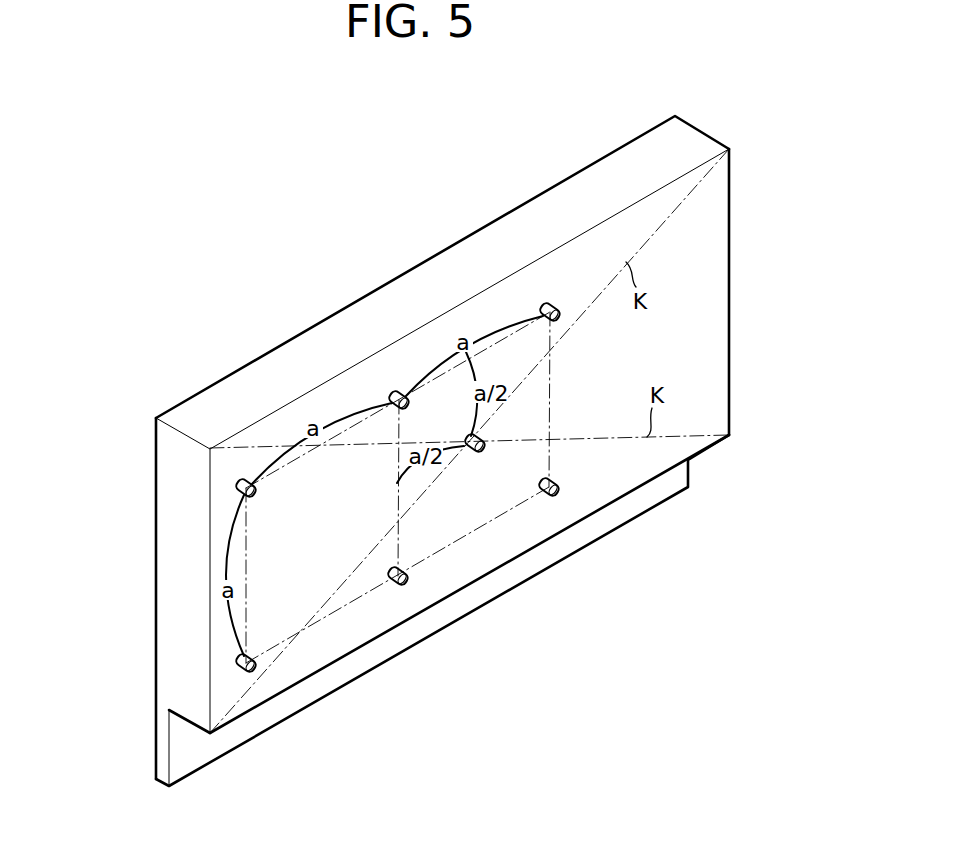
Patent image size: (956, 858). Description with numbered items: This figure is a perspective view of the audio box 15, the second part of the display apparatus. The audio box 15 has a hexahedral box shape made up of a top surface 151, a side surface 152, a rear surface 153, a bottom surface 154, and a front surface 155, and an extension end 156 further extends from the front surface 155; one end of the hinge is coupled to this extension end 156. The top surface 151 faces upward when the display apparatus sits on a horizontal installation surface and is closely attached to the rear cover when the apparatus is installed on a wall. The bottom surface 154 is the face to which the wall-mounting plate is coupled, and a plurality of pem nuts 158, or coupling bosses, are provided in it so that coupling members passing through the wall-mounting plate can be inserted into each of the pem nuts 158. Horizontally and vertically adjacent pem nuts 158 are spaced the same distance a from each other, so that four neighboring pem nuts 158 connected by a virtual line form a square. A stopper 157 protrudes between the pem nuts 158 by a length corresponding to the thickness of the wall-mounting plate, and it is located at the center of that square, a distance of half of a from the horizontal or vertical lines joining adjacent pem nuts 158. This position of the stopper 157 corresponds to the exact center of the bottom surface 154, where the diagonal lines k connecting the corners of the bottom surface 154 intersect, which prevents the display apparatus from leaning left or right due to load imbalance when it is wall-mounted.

The audio box 15 is at (338, 160).
The top surface 151 is at (155, 496).
The side surface 152 is at (167, 595).
The rear surface 153 is at (258, 378).
The bottom surface 154 is at (729, 258).
The front surface 155 is at (188, 722).
The extension end 156 is at (156, 762).
The stopper 157 is at (487, 452).
The pem nuts 158 is at (399, 393).